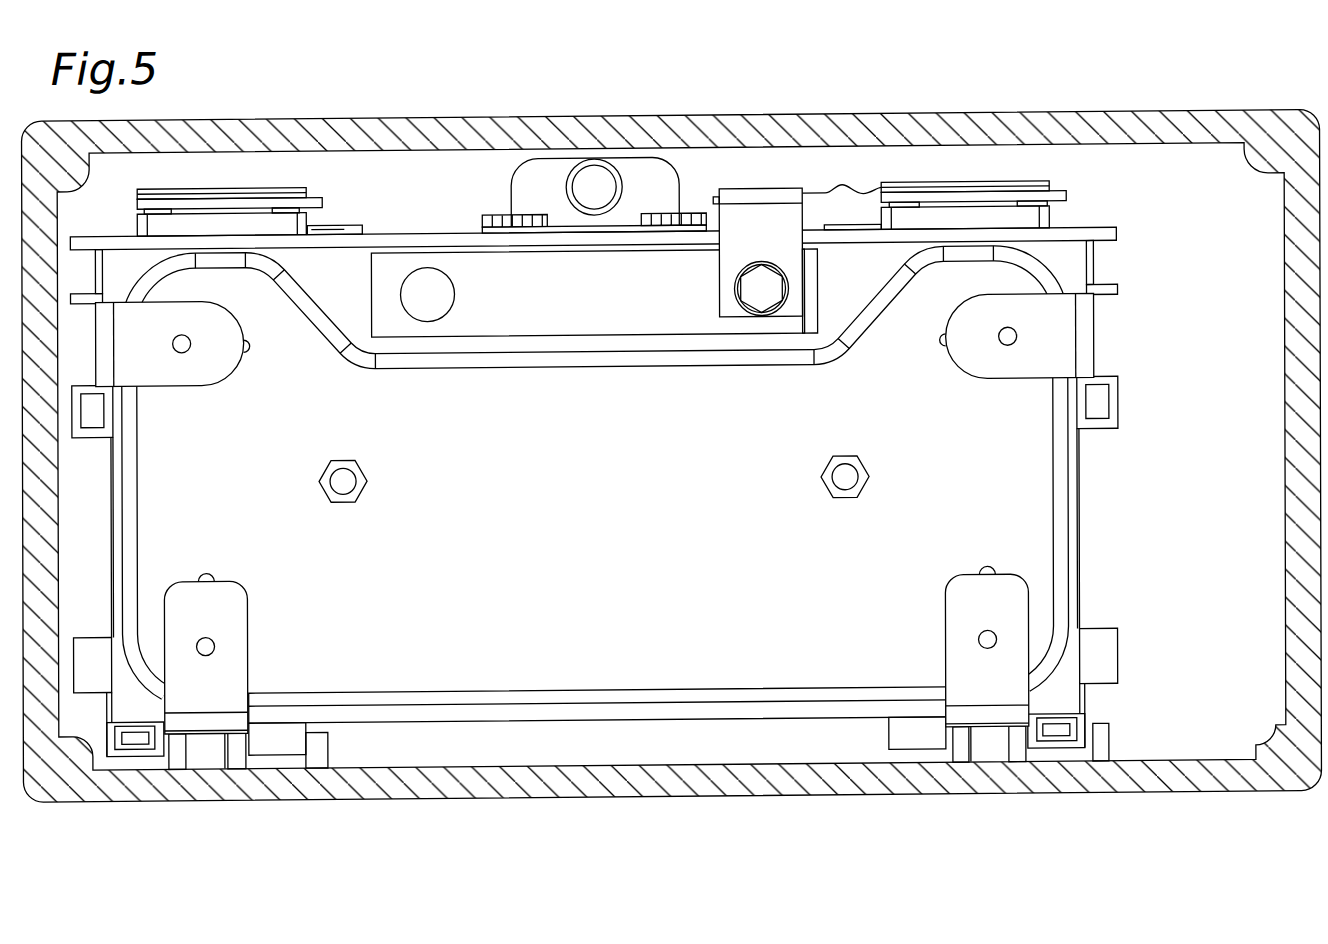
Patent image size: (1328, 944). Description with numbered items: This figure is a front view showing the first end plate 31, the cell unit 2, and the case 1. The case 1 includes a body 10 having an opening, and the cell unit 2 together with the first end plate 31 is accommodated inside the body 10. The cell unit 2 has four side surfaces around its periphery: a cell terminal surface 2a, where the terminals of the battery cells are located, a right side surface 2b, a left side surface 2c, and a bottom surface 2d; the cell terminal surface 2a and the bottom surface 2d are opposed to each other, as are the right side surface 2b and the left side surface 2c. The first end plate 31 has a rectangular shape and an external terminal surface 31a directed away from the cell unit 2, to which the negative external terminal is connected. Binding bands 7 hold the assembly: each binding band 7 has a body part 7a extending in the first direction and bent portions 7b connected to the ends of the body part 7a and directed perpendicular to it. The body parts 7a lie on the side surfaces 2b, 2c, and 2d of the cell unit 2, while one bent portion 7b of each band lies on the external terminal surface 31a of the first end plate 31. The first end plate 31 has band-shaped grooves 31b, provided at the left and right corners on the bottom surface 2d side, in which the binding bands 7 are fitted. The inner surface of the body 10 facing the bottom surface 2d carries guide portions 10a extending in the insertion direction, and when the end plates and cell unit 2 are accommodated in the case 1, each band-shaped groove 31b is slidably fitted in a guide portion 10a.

The case 1 is at (532, 114).
The body 10 is at (675, 130).
The guide portion 10a is at (236, 735).
The cell unit 2 is at (990, 184).
The cell terminal surface 2a is at (405, 227).
The right side surface 2b is at (1092, 473).
The left side surface 2c is at (100, 468).
The bottom surface 2d is at (577, 726).
The binding band 7 is at (222, 381).
The body part 7a is at (210, 718).
The bent portion 7b is at (232, 614).
The first end plate 31 is at (692, 274).
The external terminal surface 31a is at (720, 378).
The band-shaped groove 31b is at (222, 730).